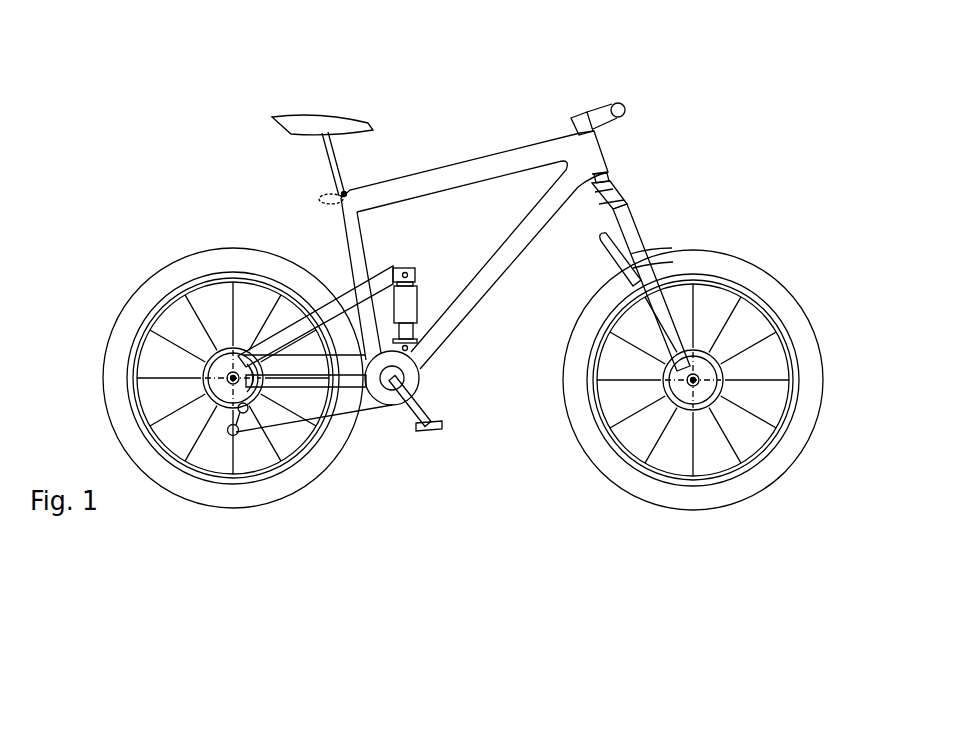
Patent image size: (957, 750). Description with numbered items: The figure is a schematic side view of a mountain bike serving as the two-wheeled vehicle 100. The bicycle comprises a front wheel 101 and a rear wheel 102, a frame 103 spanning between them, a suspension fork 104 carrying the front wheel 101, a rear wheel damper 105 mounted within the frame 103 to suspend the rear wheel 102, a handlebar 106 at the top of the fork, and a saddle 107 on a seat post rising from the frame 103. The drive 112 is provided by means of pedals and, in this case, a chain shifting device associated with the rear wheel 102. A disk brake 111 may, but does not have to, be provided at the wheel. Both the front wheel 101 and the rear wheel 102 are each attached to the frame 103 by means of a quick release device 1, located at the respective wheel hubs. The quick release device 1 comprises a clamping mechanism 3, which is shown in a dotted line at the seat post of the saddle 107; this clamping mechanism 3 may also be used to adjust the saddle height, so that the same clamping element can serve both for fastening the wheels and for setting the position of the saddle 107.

The two-wheeled vehicle 100 is at (183, 146).
The front wheel 101 is at (774, 251).
The rear wheel 102 is at (157, 257).
The frame 103 is at (490, 168).
The suspension fork 104 is at (657, 251).
The rear wheel damper 105 is at (413, 292).
The handlebar 106 is at (620, 103).
The saddle 107 is at (338, 118).
The disk brake 111 is at (723, 390).
The drive 112 is at (420, 450).
The quick release device 1 is at (196, 367).
The clamping mechanism 3 is at (342, 195).